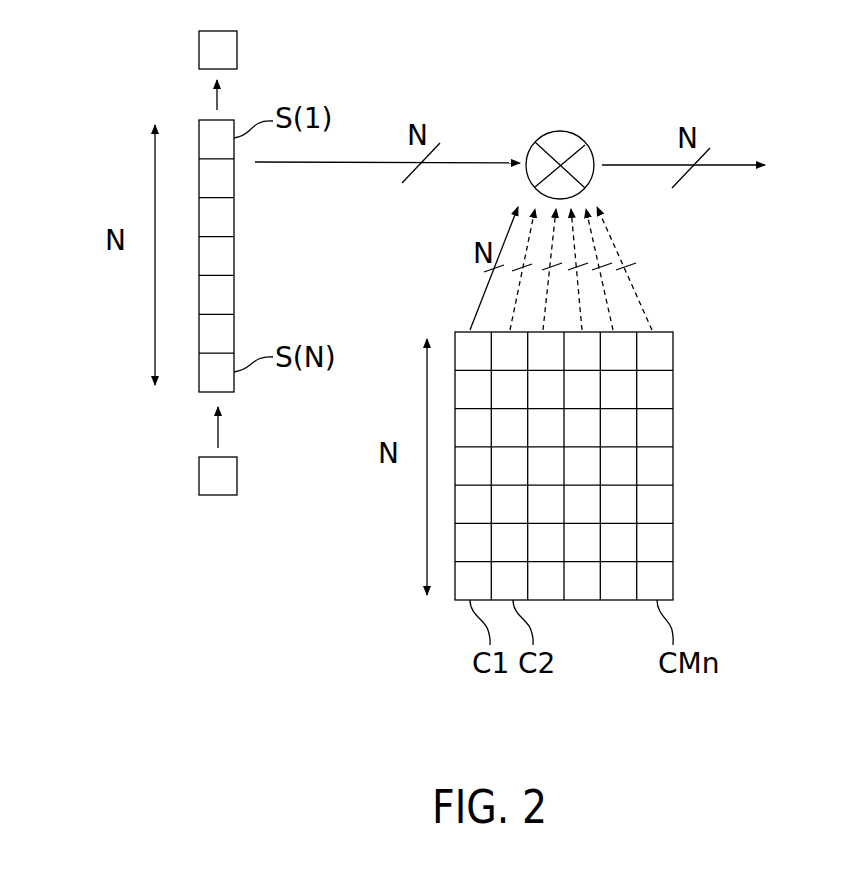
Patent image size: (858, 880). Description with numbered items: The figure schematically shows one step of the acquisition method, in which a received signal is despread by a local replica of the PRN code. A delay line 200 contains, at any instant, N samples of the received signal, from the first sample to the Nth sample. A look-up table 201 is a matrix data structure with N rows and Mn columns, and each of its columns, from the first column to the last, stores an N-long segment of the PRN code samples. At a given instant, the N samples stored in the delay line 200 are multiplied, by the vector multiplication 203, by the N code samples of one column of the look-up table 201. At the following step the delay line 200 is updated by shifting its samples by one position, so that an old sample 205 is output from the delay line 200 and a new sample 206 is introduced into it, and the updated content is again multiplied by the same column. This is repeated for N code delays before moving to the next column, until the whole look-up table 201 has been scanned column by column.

The delay line 200 is at (246, 261).
The look-up table 201 is at (692, 443).
The vector multiplication 203 is at (555, 132).
The old sample 205 is at (199, 57).
The new sample 206 is at (199, 476).